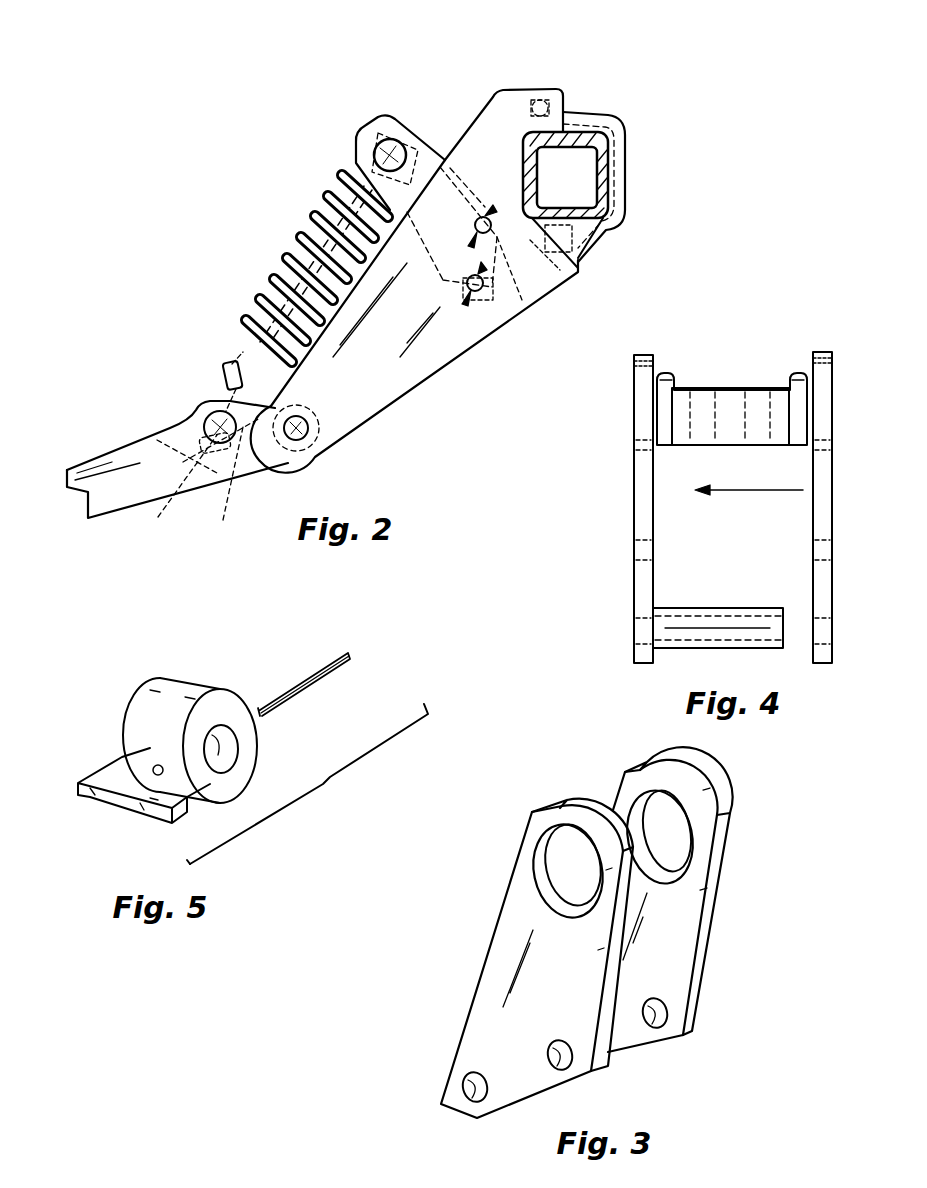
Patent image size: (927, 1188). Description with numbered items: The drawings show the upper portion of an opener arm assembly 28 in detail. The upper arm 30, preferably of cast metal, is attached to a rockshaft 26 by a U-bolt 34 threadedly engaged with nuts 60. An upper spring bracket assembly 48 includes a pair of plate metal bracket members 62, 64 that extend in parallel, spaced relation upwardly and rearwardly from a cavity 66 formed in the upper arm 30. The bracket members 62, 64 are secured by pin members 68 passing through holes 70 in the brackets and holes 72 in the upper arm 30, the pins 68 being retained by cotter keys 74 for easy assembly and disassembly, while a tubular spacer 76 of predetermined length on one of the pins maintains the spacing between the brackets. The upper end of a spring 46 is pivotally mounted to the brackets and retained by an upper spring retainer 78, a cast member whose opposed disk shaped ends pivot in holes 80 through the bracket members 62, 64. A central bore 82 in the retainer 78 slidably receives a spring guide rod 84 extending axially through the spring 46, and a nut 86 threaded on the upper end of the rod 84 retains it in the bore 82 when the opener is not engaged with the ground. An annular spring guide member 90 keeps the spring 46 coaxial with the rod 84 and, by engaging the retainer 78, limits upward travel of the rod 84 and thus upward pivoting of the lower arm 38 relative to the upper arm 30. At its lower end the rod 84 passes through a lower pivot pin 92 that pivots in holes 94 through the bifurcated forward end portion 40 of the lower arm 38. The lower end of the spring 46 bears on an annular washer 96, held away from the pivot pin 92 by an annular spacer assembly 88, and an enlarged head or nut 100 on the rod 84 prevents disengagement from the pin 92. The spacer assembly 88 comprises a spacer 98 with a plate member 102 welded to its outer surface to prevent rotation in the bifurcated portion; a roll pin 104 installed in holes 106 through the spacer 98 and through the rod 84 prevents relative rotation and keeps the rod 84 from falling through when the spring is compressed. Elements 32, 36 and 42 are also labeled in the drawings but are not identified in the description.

In FIG. 2, the rockshaft 26 is at (605, 215).
In FIG. 2, the opener arm assembly 28 is at (428, 409).
In FIG. 2, the upper arm 30 is at (433, 380).
In FIG. 2, the fastener 32 is at (565, 88).
In FIG. 2, the U-bolt 34 is at (628, 165).
In FIG. 2, the pivot boss 36 is at (300, 462).
In FIG. 2, the lower arm 38 is at (82, 465).
In FIG. 2, the forward end portion 40 is at (247, 477).
In FIG. 2, the pivot hole 42 is at (318, 430).
In FIG. 2, the spring 46 is at (292, 268).
In FIG. 2, the upper spring bracket assembly 48 is at (335, 152).
In FIG. 4, the upper spring bracket assembly 48 is at (813, 700).
In FIG. 2, the nuts 60 is at (548, 100).
In FIG. 2, the bracket member 62 is at (412, 120).
In FIG. 4, the bracket member 62 is at (645, 668).
In FIG. 3, the bracket member 62 is at (533, 1103).
In FIG. 4, the bracket member 64 is at (822, 663).
In FIG. 3, the bracket member 64 is at (677, 1035).
In FIG. 2, the cavity 66 is at (497, 128).
In FIG. 2, the pin members 68 is at (474, 222).
In FIG. 4, the holes 70 is at (640, 550).
In FIG. 3, the holes 70 is at (462, 1076).
In FIG. 2, the holes 72 is at (506, 225).
In FIG. 2, the cotter keys 74 is at (470, 242).
In FIG. 4, the tubular spacer 76 is at (725, 606).
In FIG. 2, the upper spring retainer 78 is at (378, 150).
In FIG. 4, the upper spring retainer 78 is at (680, 373).
In FIG. 2, the holes 80 is at (389, 140).
In FIG. 4, the holes 80 is at (638, 445).
In FIG. 3, the holes 80 is at (548, 862).
In FIG. 4, the central bore 82 is at (722, 395).
In FIG. 2, the spring guide rod 84 is at (322, 216).
In FIG. 2, the nut 86 is at (430, 125).
In FIG. 2, the annular spacer assembly 88 is at (226, 392).
In FIG. 5, the annular spacer assembly 88 is at (307, 784).
In FIG. 2, the annular spring guide member 90 is at (262, 325).
In FIG. 2, the lower pivot pin 92 is at (200, 405).
In FIG. 2, the holes 94 is at (205, 427).
In FIG. 2, the annular washer 96 is at (228, 360).
In FIG. 5, the spacer 98 is at (160, 680).
In FIG. 2, the enlarged head or nut 100 is at (191, 478).
In FIG. 2, the plate member 102 is at (220, 479).
In FIG. 5, the plate member 102 is at (132, 817).
In FIG. 5, the roll pin 104 is at (336, 670).
In FIG. 5, the holes 106 is at (156, 765).